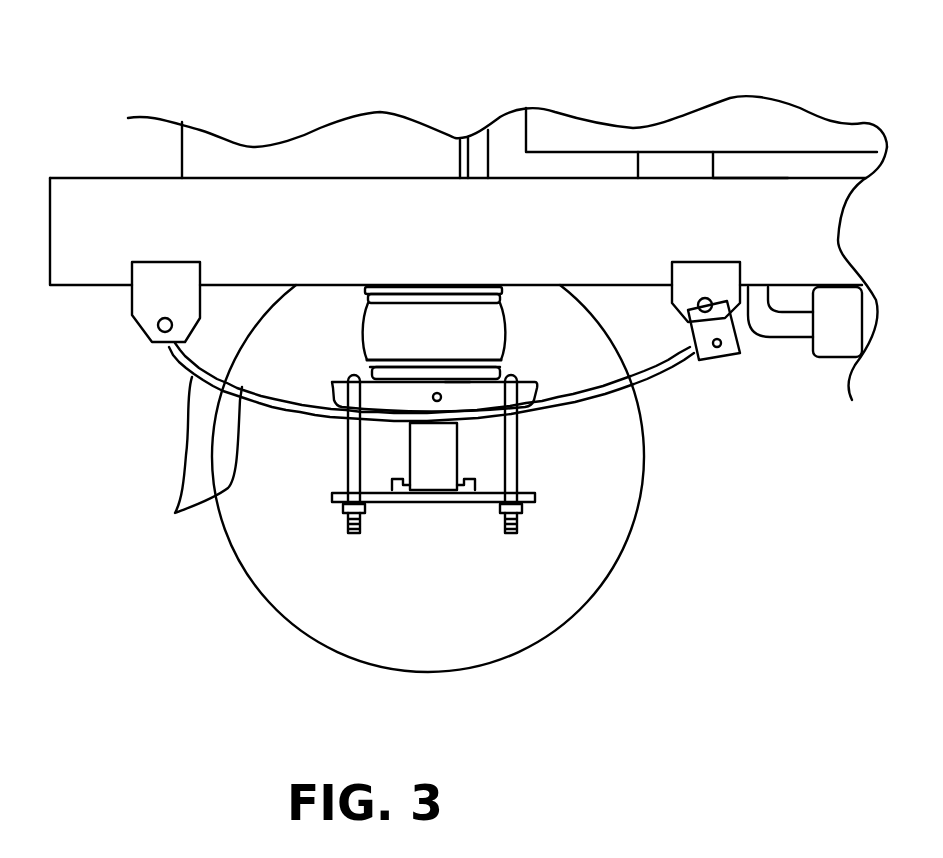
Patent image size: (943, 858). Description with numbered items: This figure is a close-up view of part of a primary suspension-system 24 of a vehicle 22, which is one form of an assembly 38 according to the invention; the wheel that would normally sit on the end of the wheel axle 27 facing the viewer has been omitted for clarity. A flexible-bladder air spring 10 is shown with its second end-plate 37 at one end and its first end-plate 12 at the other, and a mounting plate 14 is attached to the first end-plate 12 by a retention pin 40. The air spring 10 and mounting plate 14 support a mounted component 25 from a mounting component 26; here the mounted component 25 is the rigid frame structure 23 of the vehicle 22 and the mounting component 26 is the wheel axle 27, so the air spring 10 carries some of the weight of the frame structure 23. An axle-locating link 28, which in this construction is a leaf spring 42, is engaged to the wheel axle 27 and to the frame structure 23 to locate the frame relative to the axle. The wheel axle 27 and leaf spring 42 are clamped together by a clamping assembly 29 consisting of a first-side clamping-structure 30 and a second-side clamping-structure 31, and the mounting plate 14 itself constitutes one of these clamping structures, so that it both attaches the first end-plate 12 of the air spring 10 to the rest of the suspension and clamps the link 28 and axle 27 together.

The flexible-bladder air spring 10 is at (480, 335).
The first end-plate 12 is at (497, 368).
The mounting plate 14 is at (442, 447).
The vehicle 22 is at (125, 387).
The frame structure 23 is at (105, 213).
The primary suspension-system 24 is at (182, 507).
The mounted component 25 is at (175, 218).
The mounting component 26 is at (437, 470).
The wheel axle 27 is at (499, 463).
The axle-locating link 28 is at (392, 332).
The clamping assembly 29 is at (400, 398).
The first-side clamping-structure 30 is at (453, 398).
The second-side clamping-structure 31 is at (531, 655).
The second end-plate 37 is at (385, 287).
The assembly 38 is at (142, 413).
The retention pin 40 is at (437, 392).
The leaf spring 42 is at (320, 418).